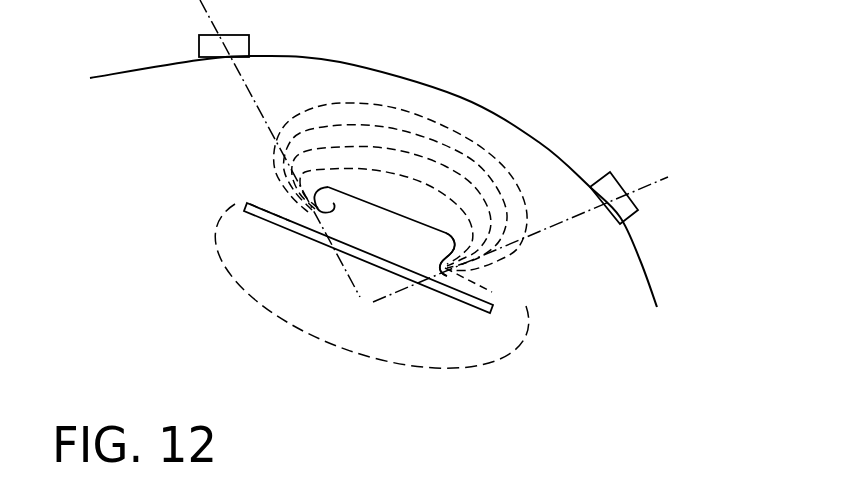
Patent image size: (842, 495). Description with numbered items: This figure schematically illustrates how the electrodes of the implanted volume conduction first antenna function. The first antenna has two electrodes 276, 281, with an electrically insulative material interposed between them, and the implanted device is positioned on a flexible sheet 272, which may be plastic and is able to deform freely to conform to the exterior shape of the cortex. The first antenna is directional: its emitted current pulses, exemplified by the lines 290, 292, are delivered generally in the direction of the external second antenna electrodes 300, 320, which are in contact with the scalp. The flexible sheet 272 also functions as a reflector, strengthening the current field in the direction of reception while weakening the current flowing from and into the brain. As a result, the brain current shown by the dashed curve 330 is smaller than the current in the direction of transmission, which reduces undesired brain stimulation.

The external second antenna electrode 300 is at (198, 53).
The external second antenna electrode 320 is at (637, 208).
The emitted current pulse line 290 is at (440, 153).
The emitted current pulse line 292 is at (500, 163).
The flexible sheet 272 is at (267, 217).
The electrode 276 is at (477, 273).
The electrode 281 is at (315, 240).
The brain current 330 is at (230, 270).